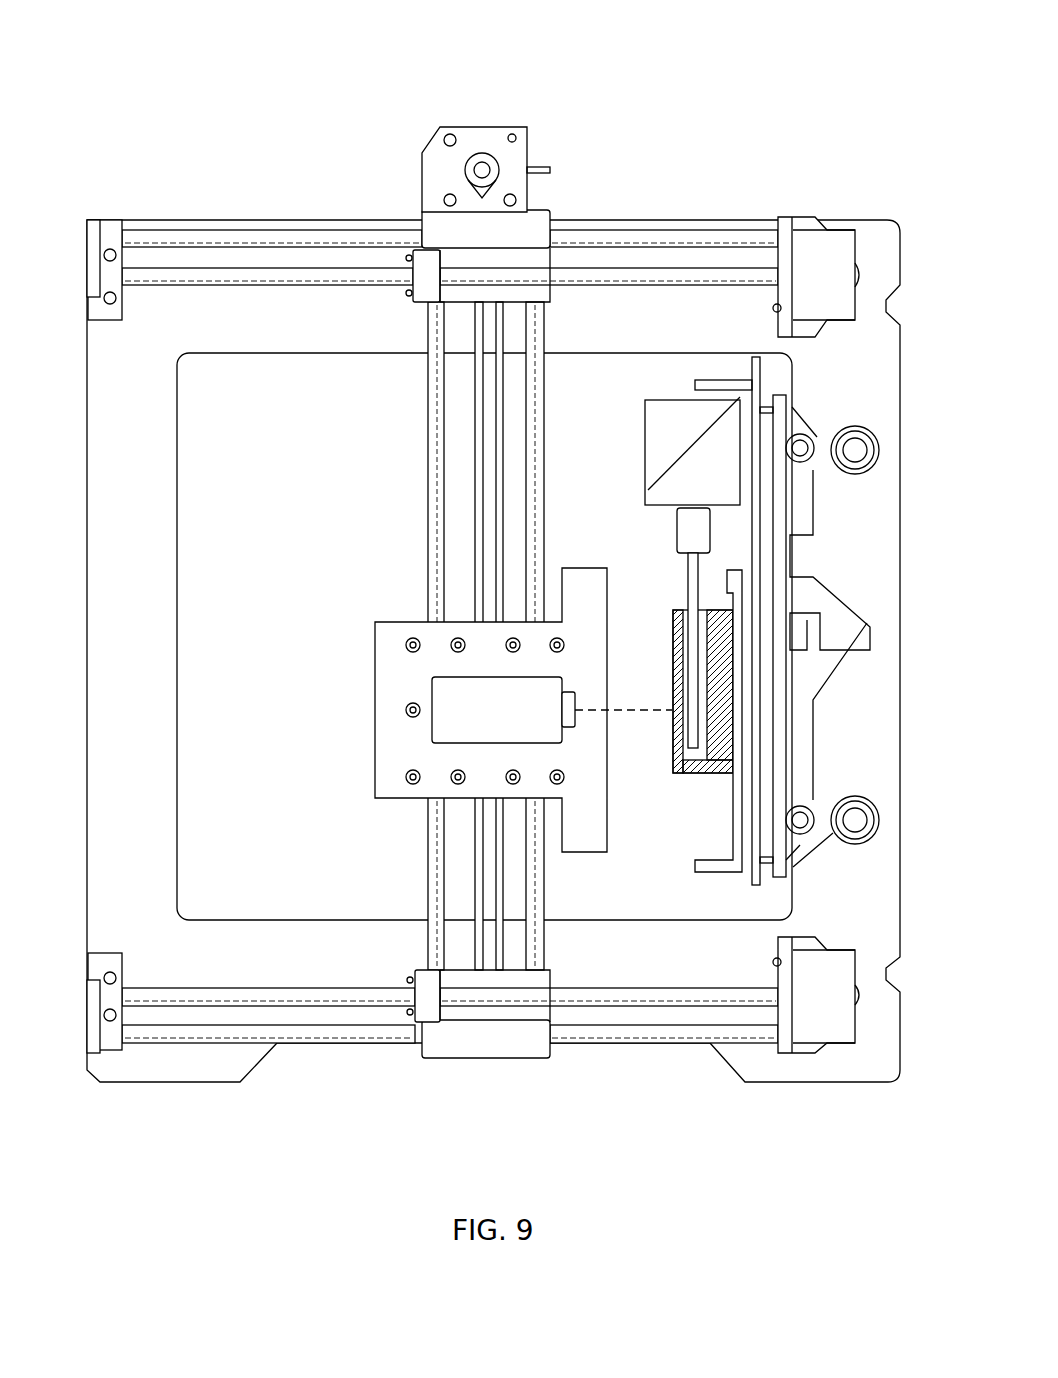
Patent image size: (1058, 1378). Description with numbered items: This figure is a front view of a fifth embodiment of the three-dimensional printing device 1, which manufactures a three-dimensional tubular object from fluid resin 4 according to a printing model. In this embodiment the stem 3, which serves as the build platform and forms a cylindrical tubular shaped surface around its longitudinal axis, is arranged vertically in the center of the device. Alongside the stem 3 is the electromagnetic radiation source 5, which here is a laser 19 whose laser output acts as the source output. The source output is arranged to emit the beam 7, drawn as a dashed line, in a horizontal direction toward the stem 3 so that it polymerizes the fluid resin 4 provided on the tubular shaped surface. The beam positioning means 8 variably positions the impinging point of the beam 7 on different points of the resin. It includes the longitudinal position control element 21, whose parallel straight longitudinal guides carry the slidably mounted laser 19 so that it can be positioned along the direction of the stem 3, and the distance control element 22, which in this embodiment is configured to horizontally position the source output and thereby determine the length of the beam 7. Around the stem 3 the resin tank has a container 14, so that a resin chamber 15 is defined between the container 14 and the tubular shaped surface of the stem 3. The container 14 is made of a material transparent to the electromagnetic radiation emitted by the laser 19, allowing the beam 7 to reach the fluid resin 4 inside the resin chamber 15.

The 3D printing device 1 is at (735, 118).
The stem 3 is at (688, 580).
The fluid resin 4 is at (705, 728).
The electromagnetic radiation source 5 is at (427, 690).
The beam 7 is at (630, 712).
The beam positioning means 8 is at (416, 178).
The container 14 is at (688, 775).
The resin chamber 15 is at (697, 757).
The laser 19 is at (455, 728).
The longitudinal position control element 21 is at (416, 447).
The distance control element 22 is at (193, 229).